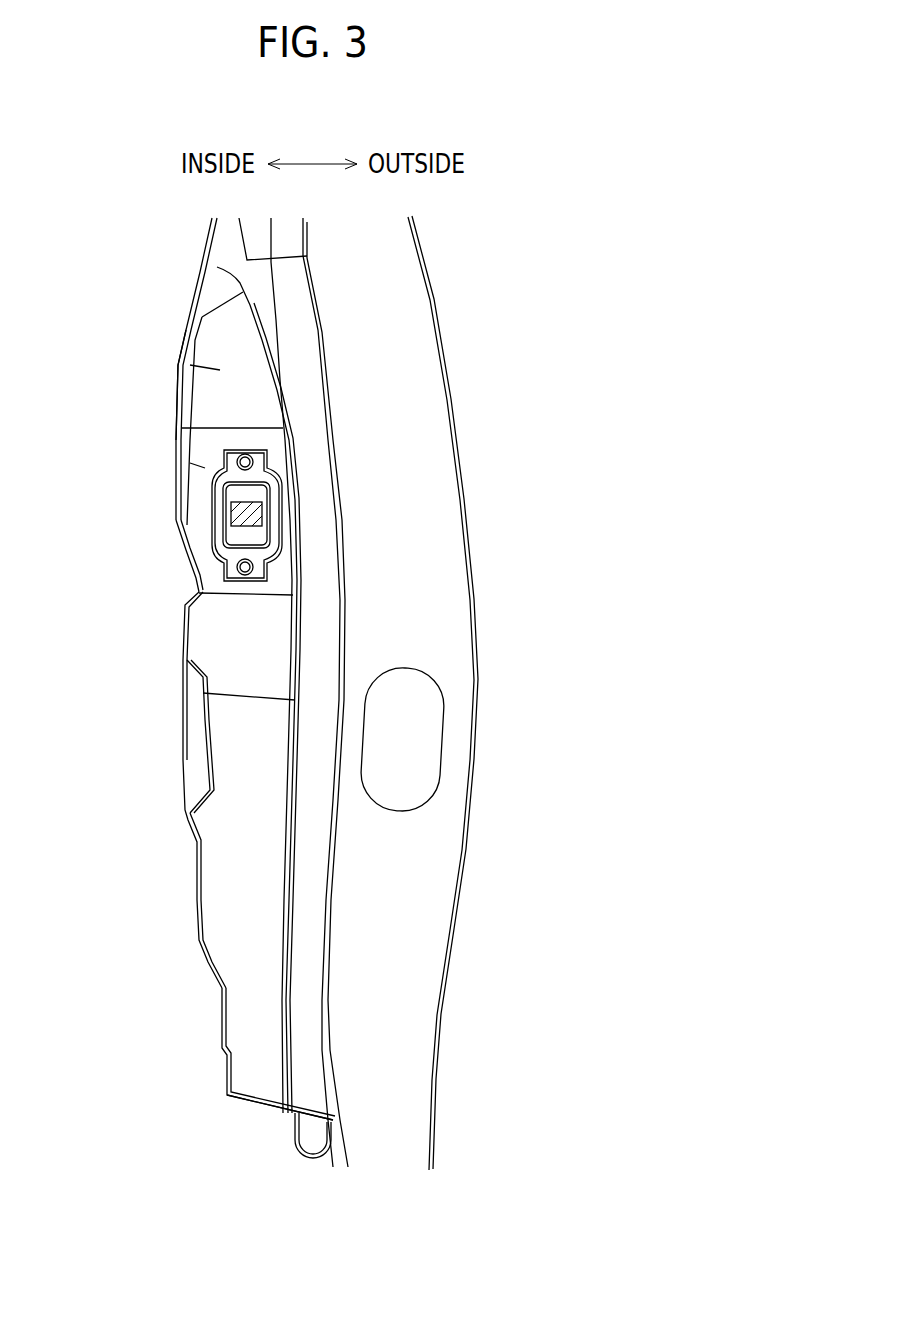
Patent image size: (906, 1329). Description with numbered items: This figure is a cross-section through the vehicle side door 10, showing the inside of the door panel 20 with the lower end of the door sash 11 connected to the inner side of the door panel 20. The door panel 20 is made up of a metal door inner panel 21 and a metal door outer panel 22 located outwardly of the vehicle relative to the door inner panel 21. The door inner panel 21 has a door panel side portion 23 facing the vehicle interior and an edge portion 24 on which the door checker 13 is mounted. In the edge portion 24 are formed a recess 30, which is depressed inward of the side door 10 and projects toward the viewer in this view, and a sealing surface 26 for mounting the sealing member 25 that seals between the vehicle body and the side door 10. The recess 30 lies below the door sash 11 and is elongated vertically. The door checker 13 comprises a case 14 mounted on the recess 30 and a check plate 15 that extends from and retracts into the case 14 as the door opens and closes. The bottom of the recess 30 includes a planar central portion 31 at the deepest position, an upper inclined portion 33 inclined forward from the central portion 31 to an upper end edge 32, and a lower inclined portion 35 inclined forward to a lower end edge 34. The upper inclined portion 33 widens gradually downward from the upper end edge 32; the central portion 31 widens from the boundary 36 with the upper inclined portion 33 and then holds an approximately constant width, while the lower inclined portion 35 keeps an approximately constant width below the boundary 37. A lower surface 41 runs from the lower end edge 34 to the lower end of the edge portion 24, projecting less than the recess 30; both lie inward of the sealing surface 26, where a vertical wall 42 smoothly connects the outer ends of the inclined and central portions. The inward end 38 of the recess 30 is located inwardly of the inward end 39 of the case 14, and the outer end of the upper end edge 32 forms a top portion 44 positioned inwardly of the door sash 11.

The vehicle side door 10 is at (497, 253).
The door sash 11 is at (214, 232).
The door checker 13 is at (162, 515).
The case 14 is at (210, 498).
The check plate 15 is at (233, 508).
The door panel 20 is at (265, 1059).
The door inner panel 21 is at (208, 960).
The door outer panel 22 is at (435, 1014).
The door panel side portion 23 is at (180, 323).
The edge portion 24 is at (256, 1122).
The sealing member 25 is at (290, 882).
The sealing surface 26 is at (302, 386).
The recess 30 is at (204, 454).
The central portion 31 is at (205, 468).
The upper end edge 32 is at (218, 306).
The upper inclined portion 33 is at (190, 365).
The lower end edge 34 is at (243, 698).
The lower inclined portion 35 is at (213, 638).
The boundary 36 is at (248, 427).
The boundary 37 is at (257, 600).
The inward end 38 is at (203, 537).
The inward end 39 is at (195, 568).
The lower surface 41 is at (235, 825).
The vertical wall 42 is at (300, 510).
The top portion 44 is at (217, 267).